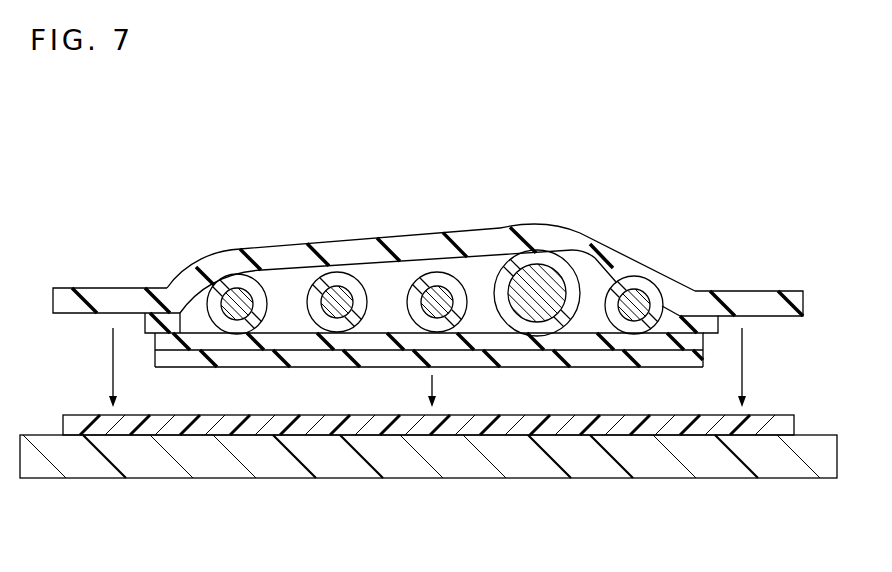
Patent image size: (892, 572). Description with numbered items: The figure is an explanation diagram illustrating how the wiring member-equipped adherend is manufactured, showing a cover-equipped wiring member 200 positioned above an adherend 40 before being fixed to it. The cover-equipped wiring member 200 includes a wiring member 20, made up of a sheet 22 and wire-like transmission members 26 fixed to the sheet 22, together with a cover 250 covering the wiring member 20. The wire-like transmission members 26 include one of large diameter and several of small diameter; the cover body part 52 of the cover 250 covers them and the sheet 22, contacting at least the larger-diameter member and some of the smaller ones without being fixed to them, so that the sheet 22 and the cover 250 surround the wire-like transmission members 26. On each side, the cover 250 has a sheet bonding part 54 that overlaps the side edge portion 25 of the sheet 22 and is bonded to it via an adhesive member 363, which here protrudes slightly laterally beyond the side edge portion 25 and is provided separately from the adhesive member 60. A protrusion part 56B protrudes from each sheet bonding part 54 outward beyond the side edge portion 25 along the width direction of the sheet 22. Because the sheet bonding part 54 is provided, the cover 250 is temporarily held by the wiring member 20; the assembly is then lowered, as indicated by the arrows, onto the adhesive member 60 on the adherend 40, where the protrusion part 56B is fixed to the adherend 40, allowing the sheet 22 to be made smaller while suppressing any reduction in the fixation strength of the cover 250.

The cover-equipped wiring member 200 is at (204, 190).
The cover 250 is at (396, 242).
The cover body part 52 is at (482, 228).
The sheet bonding part 54 is at (167, 290).
The protrusion part 56B is at (75, 292).
The adhesive member 363 is at (147, 315).
The wire-like transmission member 26 is at (309, 291).
The wiring member 20 is at (586, 373).
The sheet 22 is at (328, 367).
The side edge portion 25 is at (178, 358).
The adhesive member 60 is at (457, 437).
The adherend 40 is at (525, 465).